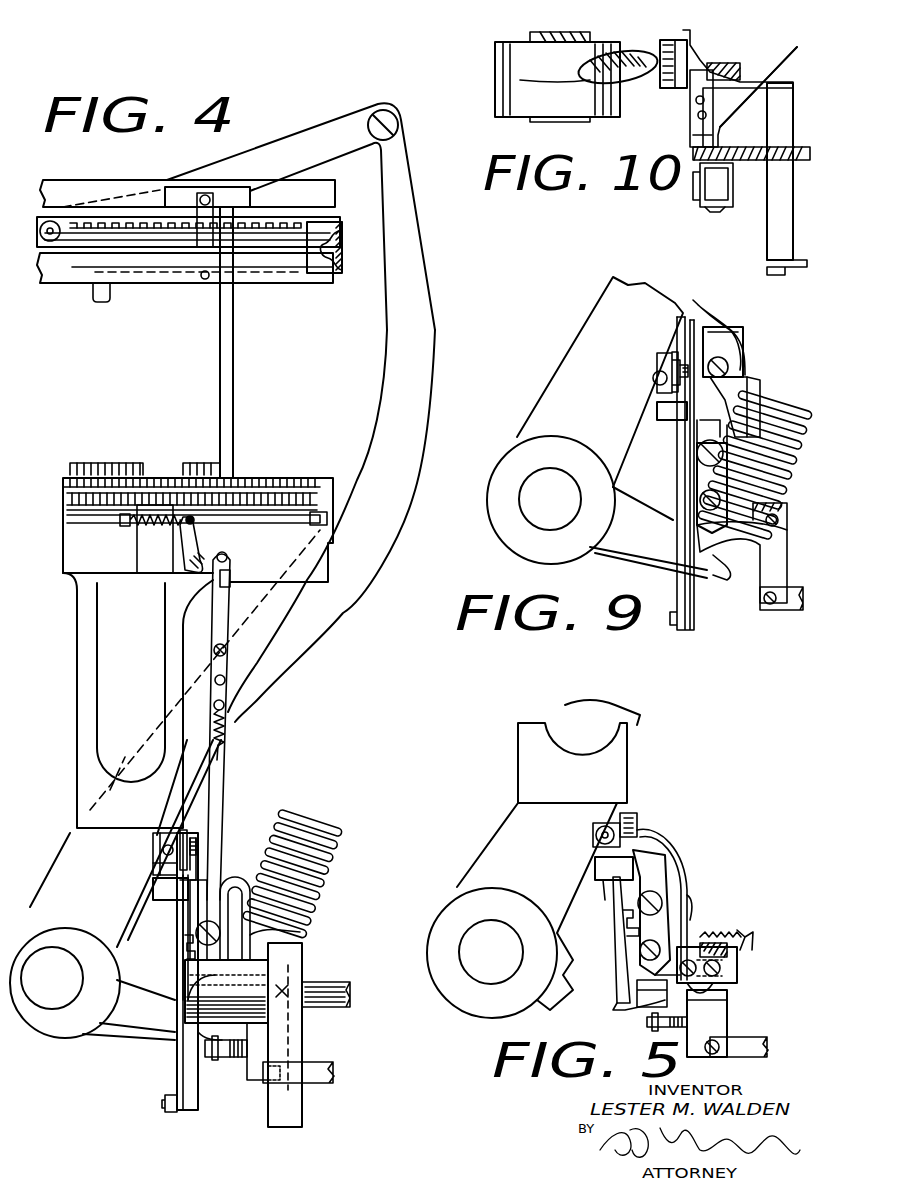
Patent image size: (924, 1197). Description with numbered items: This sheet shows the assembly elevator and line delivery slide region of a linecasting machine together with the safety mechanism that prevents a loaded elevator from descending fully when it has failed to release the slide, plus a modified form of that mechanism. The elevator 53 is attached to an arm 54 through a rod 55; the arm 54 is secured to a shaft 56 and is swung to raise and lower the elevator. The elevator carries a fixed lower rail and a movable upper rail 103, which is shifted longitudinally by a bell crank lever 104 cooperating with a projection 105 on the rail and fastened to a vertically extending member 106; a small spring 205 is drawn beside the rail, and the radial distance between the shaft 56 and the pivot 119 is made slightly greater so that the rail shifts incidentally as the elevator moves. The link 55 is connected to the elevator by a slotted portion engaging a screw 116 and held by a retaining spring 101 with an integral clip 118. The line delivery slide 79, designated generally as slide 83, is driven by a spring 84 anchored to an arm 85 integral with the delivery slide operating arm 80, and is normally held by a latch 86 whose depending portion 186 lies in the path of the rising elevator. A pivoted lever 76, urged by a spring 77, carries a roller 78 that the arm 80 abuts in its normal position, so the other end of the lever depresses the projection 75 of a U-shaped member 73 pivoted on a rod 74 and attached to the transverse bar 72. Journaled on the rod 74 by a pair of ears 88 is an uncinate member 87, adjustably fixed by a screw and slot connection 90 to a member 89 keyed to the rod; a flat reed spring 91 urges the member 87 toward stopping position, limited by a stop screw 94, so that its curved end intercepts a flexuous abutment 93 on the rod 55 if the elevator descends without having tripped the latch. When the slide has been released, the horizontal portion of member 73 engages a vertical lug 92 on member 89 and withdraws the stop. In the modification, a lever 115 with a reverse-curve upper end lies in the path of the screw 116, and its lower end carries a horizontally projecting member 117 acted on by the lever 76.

In FIG. 4, the elevator 53 is at (115, 670).
In FIG. 4, the arm 54 is at (195, 1078).
In FIG. 4, the rod 55 is at (183, 940).
In FIG. 5, the rod 55 is at (620, 893).
In FIG. 4, the shaft 56 is at (350, 995).
In FIG. 4, the bar 72 is at (333, 1075).
In FIG. 10, the bar 72 is at (790, 268).
In FIG. 9, the bar 72 is at (790, 608).
In FIG. 5, the bar 72 is at (767, 1047).
In FIG. 4, the U-shaped member 73 is at (265, 1035).
In FIG. 10, the U-shaped member 73 is at (775, 240).
In FIG. 5, the U-shaped member 73 is at (697, 950).
In FIG. 4, the rod 74 is at (300, 968).
In FIG. 5, the rod 74 is at (722, 968).
In FIG. 10, the projection 75 is at (740, 83).
In FIG. 9, the projection 75 is at (705, 558).
In FIG. 5, the projection 75 is at (617, 1003).
In FIG. 4, the pivoted lever 76 is at (207, 905).
In FIG. 10, the pivoted lever 76 is at (725, 62).
In FIG. 9, the pivoted lever 76 is at (700, 480).
In FIG. 5, the pivoted lever 76 is at (665, 870).
In FIG. 5, the spring 77 is at (745, 935).
In FIG. 4, the roller 78 is at (150, 872).
In FIG. 10, the roller 78 is at (663, 55).
In FIG. 9, the roller 78 is at (652, 385).
In FIG. 5, the roller 78 is at (600, 848).
In FIG. 4, the line delivery slide 79 is at (270, 225).
In FIG. 4, the delivery slide operating arm 80 is at (282, 662).
In FIG. 10, the delivery slide operating arm 80 is at (633, 76).
In FIG. 9, the delivery slide operating arm 80 is at (612, 290).
In FIG. 5, the delivery slide operating arm 80 is at (490, 835).
In FIG. 4, the line delivery slide 83 is at (350, 248).
In FIG. 4, the spring 84 is at (312, 815).
In FIG. 9, the spring 84 is at (790, 425).
In FIG. 4, the arm 85 is at (127, 1028).
In FIG. 9, the arm 85 is at (640, 545).
In FIG. 4, the latch 86 is at (268, 265).
In FIG. 4, the uncinate member 87 is at (216, 885).
In FIG. 5, the uncinate member 87 is at (690, 882).
In FIG. 5, the ears 88 is at (640, 988).
In FIG. 5, the member 89 is at (727, 1013).
In FIG. 5, the screw and slot connection 90 is at (725, 985).
In FIG. 4, the flat reed spring 91 is at (300, 932).
In FIG. 5, the flat reed spring 91 is at (690, 905).
In FIG. 5, the vertical lug 92 is at (737, 957).
In FIG. 4, the abutment 93 is at (190, 952).
In FIG. 5, the abutment 93 is at (625, 933).
In FIG. 4, the stop screw 94 is at (240, 1060).
In FIG. 5, the stop screw 94 is at (668, 1024).
In FIG. 4, the retaining spring 101 is at (165, 888).
In FIG. 9, the retaining spring 101 is at (668, 410).
In FIG. 5, the retaining spring 101 is at (590, 882).
In FIG. 4, the movable upper rail 103 is at (282, 515).
In FIG. 4, the bell crank lever 104 is at (178, 557).
In FIG. 4, the projection 105 is at (195, 523).
In FIG. 4, the vertically extending member 106 is at (215, 800).
In FIG. 10, the lever 115 is at (706, 185).
In FIG. 9, the lever 115 is at (742, 365).
In FIG. 4, the screw 116 is at (190, 835).
In FIG. 9, the screw 116 is at (700, 318).
In FIG. 5, the screw 116 is at (635, 818).
In FIG. 10, the horizontally projecting member 117 is at (771, 77).
In FIG. 4, the clip 118 is at (193, 880).
In FIG. 9, the clip 118 is at (700, 403).
In FIG. 5, the clip 118 is at (605, 863).
In FIG. 4, the pivot 119 is at (172, 1112).
In FIG. 4, the depending portion 186 is at (108, 296).
In FIG. 4, the spring 205 is at (140, 534).